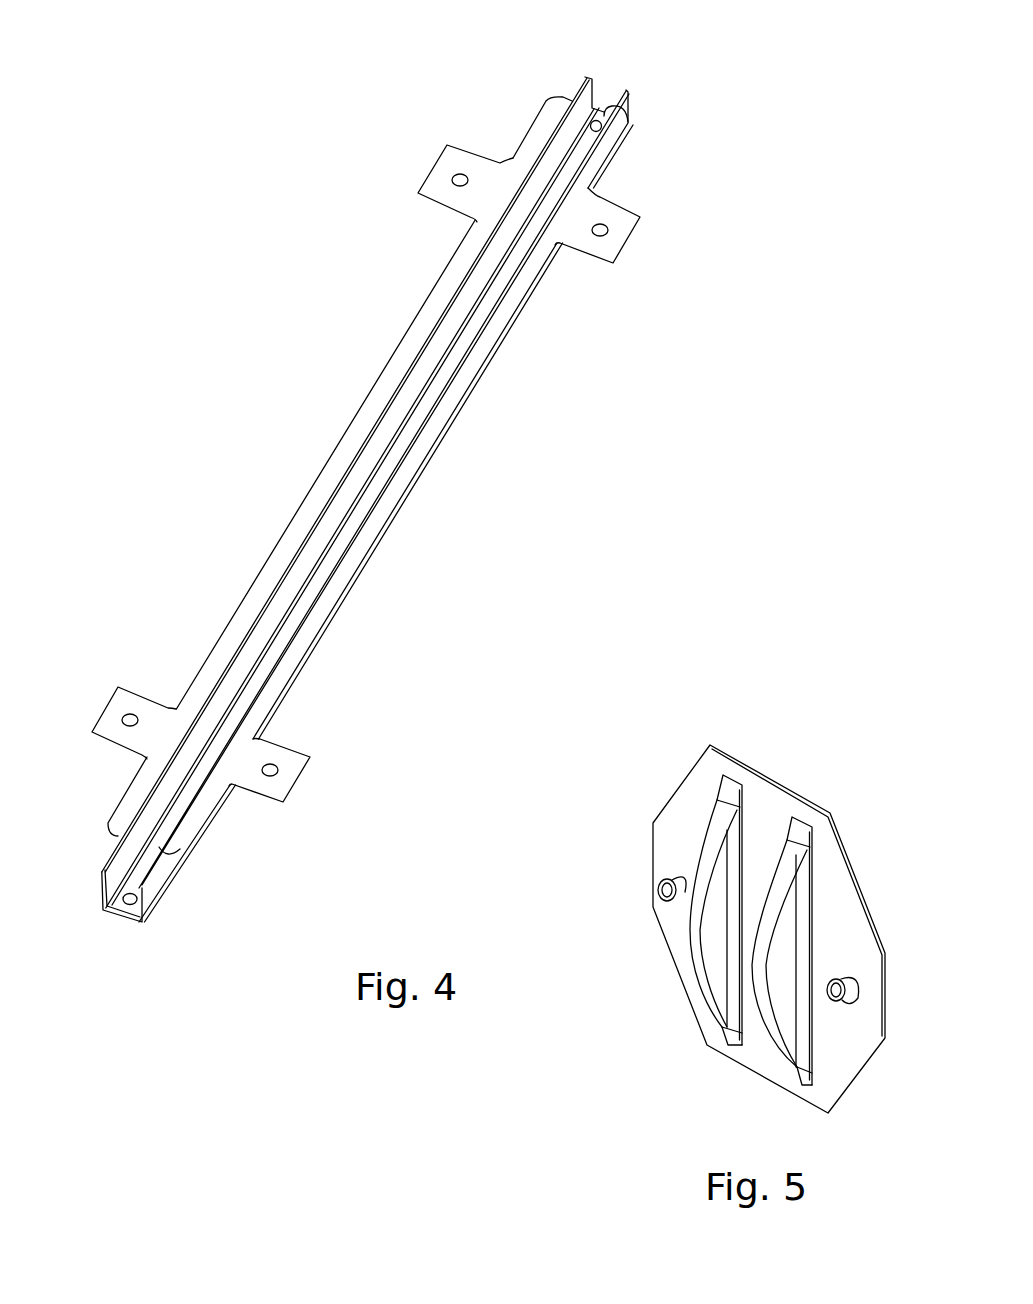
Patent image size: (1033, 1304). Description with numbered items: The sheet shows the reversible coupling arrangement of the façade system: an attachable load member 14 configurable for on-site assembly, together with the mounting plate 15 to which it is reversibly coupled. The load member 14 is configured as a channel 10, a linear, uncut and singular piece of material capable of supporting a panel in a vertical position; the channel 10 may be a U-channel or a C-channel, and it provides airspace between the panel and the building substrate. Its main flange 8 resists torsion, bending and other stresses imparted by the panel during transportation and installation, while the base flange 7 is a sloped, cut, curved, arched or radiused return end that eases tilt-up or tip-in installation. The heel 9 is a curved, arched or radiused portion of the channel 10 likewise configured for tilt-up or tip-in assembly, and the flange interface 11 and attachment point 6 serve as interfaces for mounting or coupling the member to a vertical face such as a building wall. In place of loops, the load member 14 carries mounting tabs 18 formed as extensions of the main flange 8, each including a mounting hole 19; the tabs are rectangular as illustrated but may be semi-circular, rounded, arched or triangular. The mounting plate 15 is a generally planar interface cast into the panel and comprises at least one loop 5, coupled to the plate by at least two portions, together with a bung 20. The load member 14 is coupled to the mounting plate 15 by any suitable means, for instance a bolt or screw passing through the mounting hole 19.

In FIG. 5, the loop 5 is at (702, 827).
In FIG. 4, the attachment point 6 is at (123, 903).
In FIG. 4, the base flange 7 is at (165, 853).
In FIG. 4, the main flange 8 is at (355, 500).
In FIG. 4, the heel 9 is at (102, 867).
In FIG. 4, the channel 10 is at (597, 118).
In FIG. 4, the flange interface 11 is at (387, 377).
In FIG. 4, the attachable load member 14 is at (377, 533).
In FIG. 5, the mounting plate 15 is at (755, 901).
In FIG. 4, the mounting tabs 18 is at (300, 777).
In FIG. 4, the mounting hole 19 is at (605, 235).
In FIG. 5, the bung 20 is at (850, 970).